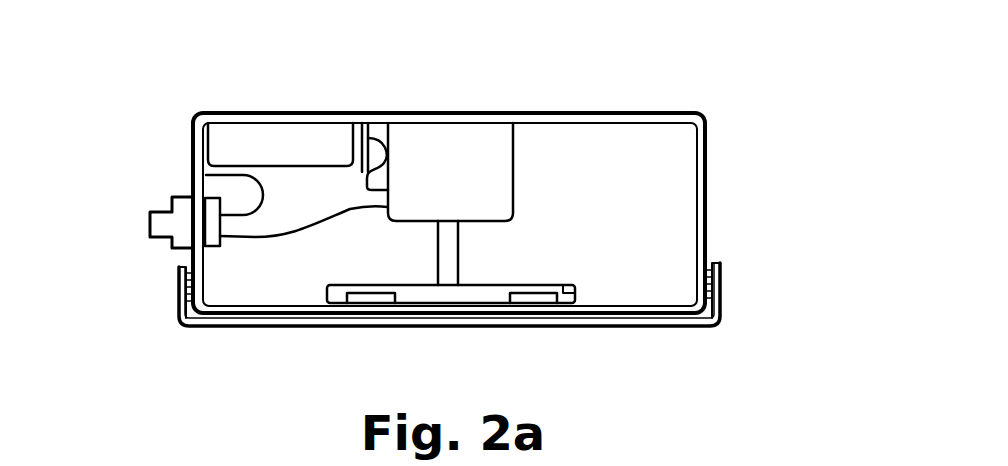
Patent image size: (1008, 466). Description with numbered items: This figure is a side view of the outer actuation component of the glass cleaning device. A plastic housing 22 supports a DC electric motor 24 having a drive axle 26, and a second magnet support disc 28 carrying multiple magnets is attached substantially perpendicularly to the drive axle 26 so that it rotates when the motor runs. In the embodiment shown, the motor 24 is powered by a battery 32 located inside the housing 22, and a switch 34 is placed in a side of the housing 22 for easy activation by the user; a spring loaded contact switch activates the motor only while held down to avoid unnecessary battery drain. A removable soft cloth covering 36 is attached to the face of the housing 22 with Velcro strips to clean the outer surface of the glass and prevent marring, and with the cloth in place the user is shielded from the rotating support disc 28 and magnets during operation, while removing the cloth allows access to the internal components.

The plastic housing 22 is at (707, 176).
The DC electric motor 24 is at (475, 172).
The drive axle 26 is at (437, 250).
The second magnet support disc 28 is at (563, 283).
The battery 32 is at (300, 140).
The switch 34 is at (170, 200).
The removable soft cloth covering 36 is at (681, 326).